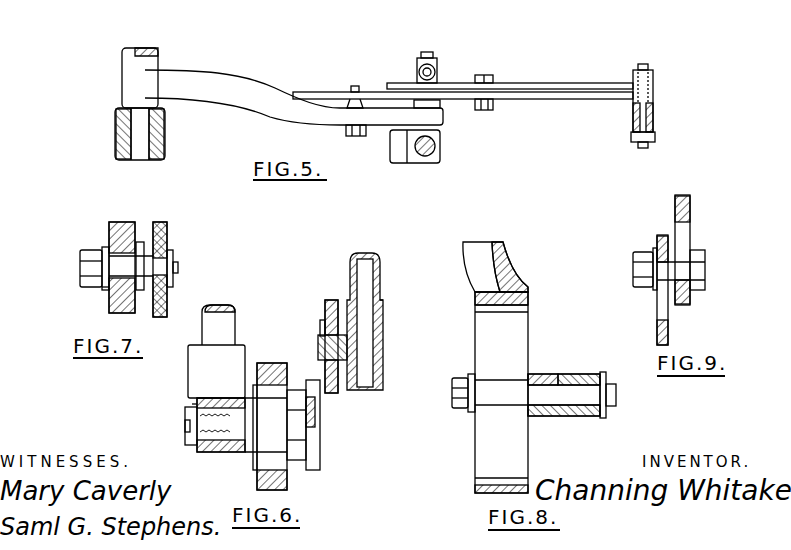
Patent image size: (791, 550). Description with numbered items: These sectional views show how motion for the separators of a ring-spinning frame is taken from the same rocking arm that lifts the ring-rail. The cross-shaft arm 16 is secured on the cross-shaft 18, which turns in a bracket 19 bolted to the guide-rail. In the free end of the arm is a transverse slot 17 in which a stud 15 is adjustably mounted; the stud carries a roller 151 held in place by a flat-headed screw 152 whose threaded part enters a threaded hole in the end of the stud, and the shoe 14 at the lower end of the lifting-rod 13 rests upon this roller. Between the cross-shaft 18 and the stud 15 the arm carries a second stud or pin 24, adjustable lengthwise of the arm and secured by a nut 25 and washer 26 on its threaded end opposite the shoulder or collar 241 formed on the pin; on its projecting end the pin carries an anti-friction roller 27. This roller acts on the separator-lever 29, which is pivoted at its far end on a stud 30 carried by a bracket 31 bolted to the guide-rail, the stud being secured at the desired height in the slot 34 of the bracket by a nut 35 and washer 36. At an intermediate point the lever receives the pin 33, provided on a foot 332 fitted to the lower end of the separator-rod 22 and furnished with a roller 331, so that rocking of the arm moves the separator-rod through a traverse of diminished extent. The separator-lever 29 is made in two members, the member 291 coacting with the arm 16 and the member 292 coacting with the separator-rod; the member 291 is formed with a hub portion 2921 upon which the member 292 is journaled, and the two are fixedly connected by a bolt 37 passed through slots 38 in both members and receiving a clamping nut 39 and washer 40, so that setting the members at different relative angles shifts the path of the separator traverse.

In FIG. 5, the lifting-rod 13 is at (428, 158).
In FIG. 6, the lifting-rod 13 is at (218, 325).
In FIG. 5, the shoe 14 is at (440, 157).
In FIG. 6, the shoe 14 is at (216, 371).
In FIG. 6, the stud 15 is at (233, 430).
In FIG. 6, the roller 151 is at (190, 400).
In FIG. 6, the flat-headed screw 152 is at (184, 420).
In FIG. 5, the cross-shaft arm 16 is at (294, 97).
In FIG. 7, the cross-shaft arm 16 is at (119, 223).
In FIG. 6, the cross-shaft arm 16 is at (289, 478).
In FIG. 6, the transverse slot 17 is at (258, 462).
In FIG. 5, the cross-shaft 18 is at (140, 78).
In FIG. 5, the bracket 19 is at (127, 134).
In FIG. 5, the separator-rod 22 is at (416, 80).
In FIG. 6, the separator-rod 22 is at (349, 276).
In FIG. 5, the stud or pin 24 is at (350, 86).
In FIG. 7, the stud or pin 24 is at (79, 267).
In FIG. 7, the shoulder or collar 241 is at (140, 243).
In FIG. 5, the nut 25 is at (365, 138).
In FIG. 7, the nut 25 is at (100, 248).
In FIG. 7, the washer 26 is at (102, 292).
In FIG. 7, the anti-friction roller 27 is at (173, 289).
In FIG. 5, the separator-lever 29 is at (463, 76).
In FIG. 7, the separator-lever 29 is at (175, 267).
In FIG. 9, the separator-lever 29 is at (670, 265).
In FIG. 5, the member of separator-lever 291 is at (553, 101).
In FIG. 6, the member of separator-lever 291 is at (321, 441).
In FIG. 8, the member of separator-lever 291 is at (540, 376).
In FIG. 9, the member of separator-lever 291 is at (656, 337).
In FIG. 5, the member of separator-lever 292 is at (512, 83).
In FIG. 6, the member of separator-lever 292 is at (330, 395).
In FIG. 8, the member of separator-lever 292 is at (561, 377).
In FIG. 9, the member of separator-lever 292 is at (700, 250).
In FIG. 8, the hub portion 2921 is at (590, 414).
In FIG. 5, the stud or pin 30 is at (646, 109).
In FIG. 8, the stud or pin 30 is at (572, 395).
In FIG. 5, the bracket 31 is at (658, 121).
In FIG. 8, the bracket 31 is at (495, 273).
In FIG. 6, the pin 33 is at (317, 347).
In FIG. 6, the roller 331 is at (325, 328).
In FIG. 6, the foot 332 is at (384, 318).
In FIG. 8, the slot 34 is at (501, 392).
In FIG. 5, the nut 35 is at (652, 140).
In FIG. 8, the nut 35 is at (455, 410).
In FIG. 5, the washer 36 is at (632, 136).
In FIG. 8, the washer 36 is at (472, 420).
In FIG. 9, the bolt 37 is at (632, 270).
In FIG. 9, the slots 38 is at (685, 232).
In FIG. 9, the clamping nut 39 is at (650, 255).
In FIG. 9, the washer 40 is at (655, 246).